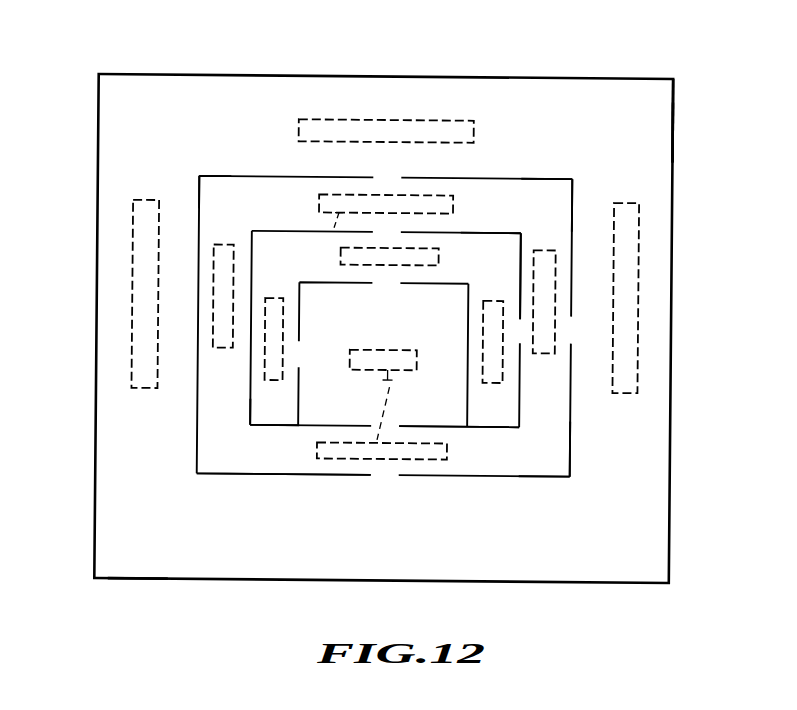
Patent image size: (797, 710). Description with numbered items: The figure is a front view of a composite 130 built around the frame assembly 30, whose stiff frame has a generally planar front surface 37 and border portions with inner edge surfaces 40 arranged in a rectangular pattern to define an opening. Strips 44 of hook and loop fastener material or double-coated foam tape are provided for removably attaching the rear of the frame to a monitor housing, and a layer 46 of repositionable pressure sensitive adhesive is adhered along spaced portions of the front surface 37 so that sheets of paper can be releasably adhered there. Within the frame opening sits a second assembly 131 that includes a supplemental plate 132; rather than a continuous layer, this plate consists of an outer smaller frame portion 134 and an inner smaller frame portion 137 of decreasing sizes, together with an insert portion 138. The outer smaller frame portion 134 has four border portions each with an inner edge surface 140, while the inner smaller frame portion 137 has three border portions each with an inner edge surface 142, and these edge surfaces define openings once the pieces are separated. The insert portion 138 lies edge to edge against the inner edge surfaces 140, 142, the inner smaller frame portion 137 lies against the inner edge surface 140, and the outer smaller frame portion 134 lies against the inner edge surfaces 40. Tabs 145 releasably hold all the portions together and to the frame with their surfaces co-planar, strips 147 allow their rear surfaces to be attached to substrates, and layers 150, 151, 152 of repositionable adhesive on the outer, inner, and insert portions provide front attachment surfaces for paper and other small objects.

The frame assembly 30 is at (588, 66).
The composite 130 is at (685, 56).
The front surface 37 is at (665, 124).
The layer of repositionable pressure sensitive adhesive 46 is at (139, 565).
The strips 44 is at (438, 120).
The outer smaller frame portion 134 is at (228, 177).
The layer of repositionable pressure sensitive adhesive 150 is at (206, 189).
The second assembly 131 is at (232, 483).
The supplemental plate 132 is at (573, 460).
The inner edge surfaces 40 is at (545, 191).
The inner smaller frame portion 137 is at (282, 232).
The inner edge surface 140 is at (495, 242).
The layer of repositionable pressure sensitive adhesive 151 is at (270, 417).
The layer of repositionable pressure sensitive adhesive 152 is at (453, 412).
The insert portion 138 is at (453, 340).
The tabs 145 is at (393, 172).
The strips 147 is at (218, 353).
The inner edge surface 142 is at (467, 383).